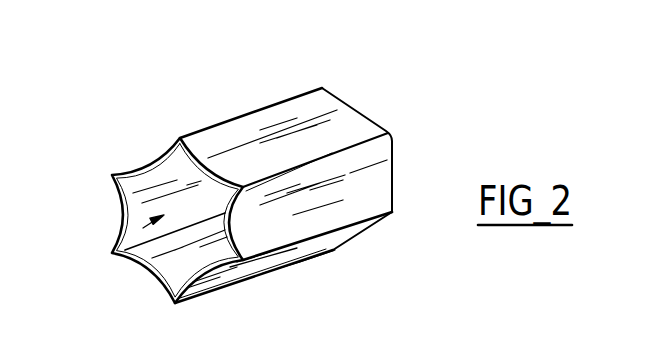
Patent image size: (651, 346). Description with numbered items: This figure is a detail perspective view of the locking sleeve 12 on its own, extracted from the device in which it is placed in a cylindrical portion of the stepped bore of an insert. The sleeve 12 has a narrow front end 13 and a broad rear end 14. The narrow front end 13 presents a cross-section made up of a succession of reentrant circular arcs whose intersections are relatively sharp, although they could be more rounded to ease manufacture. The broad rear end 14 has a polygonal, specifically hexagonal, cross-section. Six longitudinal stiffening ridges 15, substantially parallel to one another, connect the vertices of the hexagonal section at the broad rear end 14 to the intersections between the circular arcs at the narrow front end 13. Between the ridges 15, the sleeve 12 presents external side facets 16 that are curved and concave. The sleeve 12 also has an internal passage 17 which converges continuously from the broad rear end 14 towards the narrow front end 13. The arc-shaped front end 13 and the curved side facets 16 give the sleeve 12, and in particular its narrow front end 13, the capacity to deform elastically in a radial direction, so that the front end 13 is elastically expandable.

The locking sleeve 12 is at (255, 172).
The narrow front end 13 is at (152, 273).
The broad rear end 14 is at (384, 120).
The longitudinal stiffening ridges 15 is at (340, 227).
The external side facets 16 is at (209, 157).
The internal passage 17 is at (146, 226).